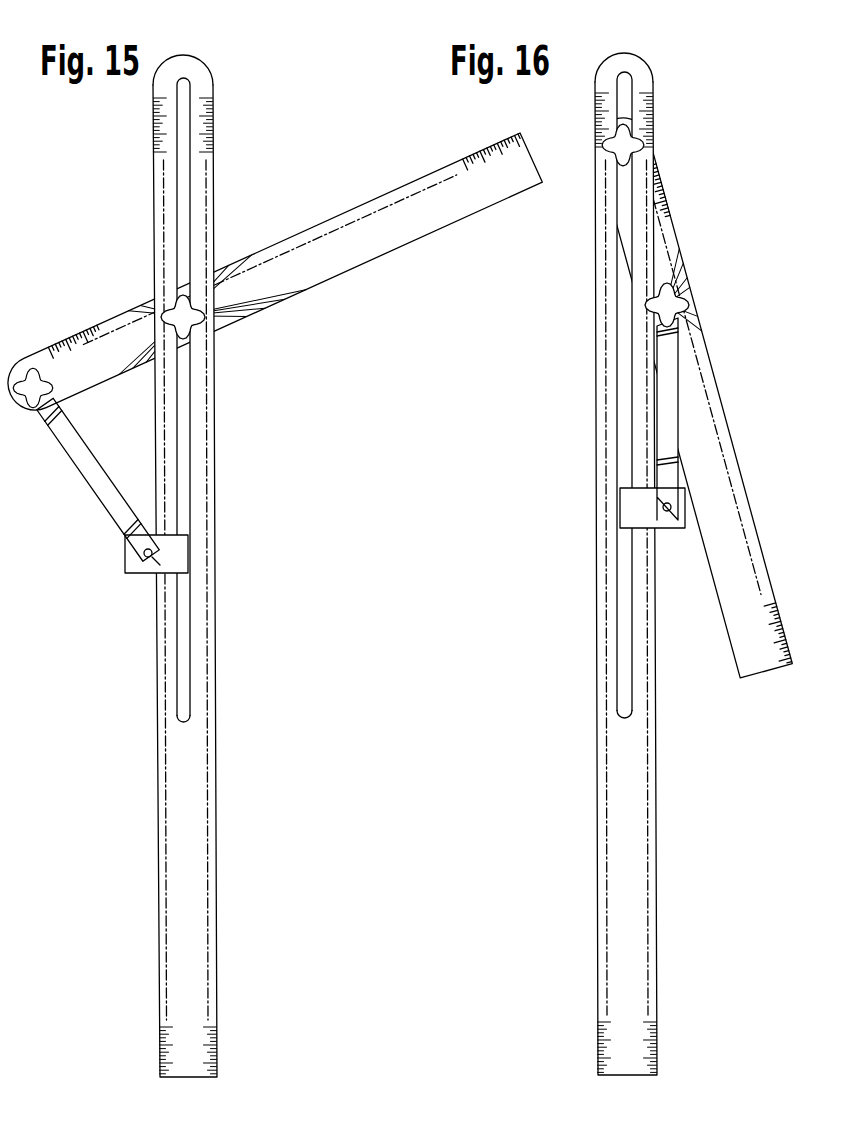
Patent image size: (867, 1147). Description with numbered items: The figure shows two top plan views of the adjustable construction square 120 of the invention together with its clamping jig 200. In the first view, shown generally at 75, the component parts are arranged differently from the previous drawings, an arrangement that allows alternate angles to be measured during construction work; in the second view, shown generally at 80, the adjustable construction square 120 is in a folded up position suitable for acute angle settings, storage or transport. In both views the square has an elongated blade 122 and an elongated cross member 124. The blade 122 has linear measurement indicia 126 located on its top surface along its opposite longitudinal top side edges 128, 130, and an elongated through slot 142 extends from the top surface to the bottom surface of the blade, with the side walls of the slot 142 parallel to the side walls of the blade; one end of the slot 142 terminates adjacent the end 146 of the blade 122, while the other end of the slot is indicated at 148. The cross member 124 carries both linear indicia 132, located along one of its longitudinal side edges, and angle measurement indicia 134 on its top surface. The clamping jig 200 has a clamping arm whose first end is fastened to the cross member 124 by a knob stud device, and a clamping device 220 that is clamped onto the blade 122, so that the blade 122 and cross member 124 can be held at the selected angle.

In FIG. 15, the adjustable construction square arrangement 75 is at (75, 156).
In FIG. 16, the adjustable construction square folded position 80 is at (734, 95).
In FIG. 15, the adjustable construction square 120 is at (218, 582).
In FIG. 16, the adjustable construction square 120 is at (597, 607).
In FIG. 15, the elongated blade 122 is at (218, 793).
In FIG. 16, the elongated blade 122 is at (597, 795).
In FIG. 15, the elongated cross member 124 is at (370, 262).
In FIG. 16, the elongated cross member 124 is at (772, 548).
In FIG. 15, the linear measurement indicia 126 is at (214, 116).
In FIG. 16, the linear measurement indicia 126 is at (655, 112).
In FIG. 15, the longitudinal top side edge 128 is at (160, 1049).
In FIG. 16, the longitudinal top side edge 128 is at (600, 1042).
In FIG. 15, the longitudinal top side edge 130 is at (218, 1047).
In FIG. 16, the longitudinal top side edge 130 is at (658, 1058).
In FIG. 15, the linear indicia 132 is at (72, 338).
In FIG. 16, the linear indicia 132 is at (672, 200).
In FIG. 15, the angle measurement indicia 134 is at (240, 324).
In FIG. 16, the angle measurement indicia 134 is at (670, 270).
In FIG. 15, the elongated through slot 142 is at (188, 428).
In FIG. 16, the elongated through slot 142 is at (625, 336).
In FIG. 15, the end of blade 146 is at (186, 57).
In FIG. 16, the end of blade 146 is at (634, 55).
In FIG. 15, the end of slot 148 is at (190, 720).
In FIG. 16, the end of slot 148 is at (616, 710).
In FIG. 15, the clamping jig 200 is at (78, 476).
In FIG. 16, the clamping jig 200 is at (681, 387).
In FIG. 15, the clamping device 220 is at (131, 576).
In FIG. 16, the clamping device 220 is at (618, 528).